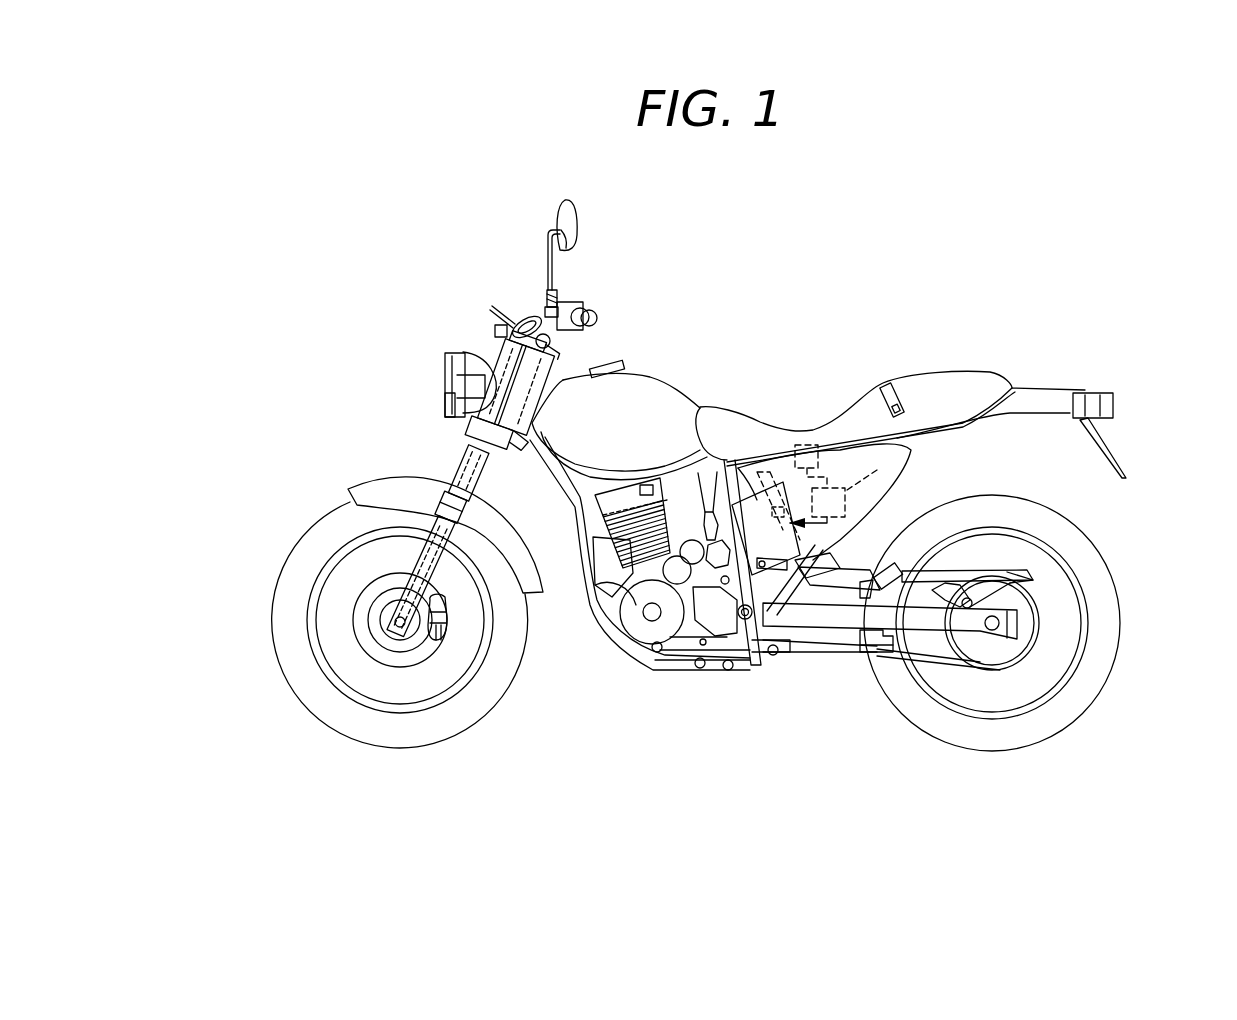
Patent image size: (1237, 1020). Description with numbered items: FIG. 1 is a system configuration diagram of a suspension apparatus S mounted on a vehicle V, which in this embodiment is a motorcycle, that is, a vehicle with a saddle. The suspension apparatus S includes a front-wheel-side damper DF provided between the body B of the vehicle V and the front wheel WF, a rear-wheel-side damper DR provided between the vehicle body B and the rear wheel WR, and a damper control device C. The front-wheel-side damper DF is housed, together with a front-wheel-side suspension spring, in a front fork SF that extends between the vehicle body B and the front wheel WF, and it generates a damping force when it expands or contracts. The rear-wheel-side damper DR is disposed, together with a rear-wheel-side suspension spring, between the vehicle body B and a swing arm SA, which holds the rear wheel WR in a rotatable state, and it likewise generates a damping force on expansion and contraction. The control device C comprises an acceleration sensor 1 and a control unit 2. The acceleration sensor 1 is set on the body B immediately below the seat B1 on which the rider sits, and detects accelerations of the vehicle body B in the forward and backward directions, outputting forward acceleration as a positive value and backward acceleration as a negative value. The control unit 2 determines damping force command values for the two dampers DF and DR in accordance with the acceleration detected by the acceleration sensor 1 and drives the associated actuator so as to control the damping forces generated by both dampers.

The vehicle V is at (437, 297).
The vehicle body B is at (648, 376).
The seat B1 is at (747, 413).
The front fork SF is at (812, 503).
The front wheel WF is at (287, 562).
The rear wheel WR is at (1113, 610).
The front-wheel-side damper DF is at (432, 567).
The rear-wheel-side damper DR is at (806, 578).
The swing arm SA is at (933, 622).
The acceleration sensor 1 is at (807, 445).
The damper control device C is at (841, 467).
The suspension apparatus S is at (866, 464).
The control unit 2 is at (877, 470).